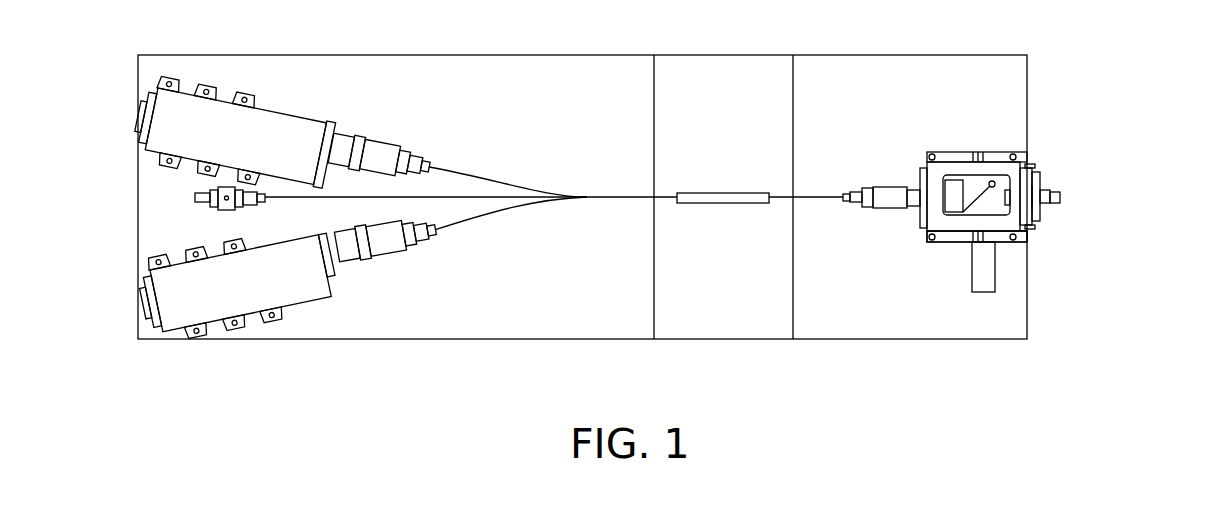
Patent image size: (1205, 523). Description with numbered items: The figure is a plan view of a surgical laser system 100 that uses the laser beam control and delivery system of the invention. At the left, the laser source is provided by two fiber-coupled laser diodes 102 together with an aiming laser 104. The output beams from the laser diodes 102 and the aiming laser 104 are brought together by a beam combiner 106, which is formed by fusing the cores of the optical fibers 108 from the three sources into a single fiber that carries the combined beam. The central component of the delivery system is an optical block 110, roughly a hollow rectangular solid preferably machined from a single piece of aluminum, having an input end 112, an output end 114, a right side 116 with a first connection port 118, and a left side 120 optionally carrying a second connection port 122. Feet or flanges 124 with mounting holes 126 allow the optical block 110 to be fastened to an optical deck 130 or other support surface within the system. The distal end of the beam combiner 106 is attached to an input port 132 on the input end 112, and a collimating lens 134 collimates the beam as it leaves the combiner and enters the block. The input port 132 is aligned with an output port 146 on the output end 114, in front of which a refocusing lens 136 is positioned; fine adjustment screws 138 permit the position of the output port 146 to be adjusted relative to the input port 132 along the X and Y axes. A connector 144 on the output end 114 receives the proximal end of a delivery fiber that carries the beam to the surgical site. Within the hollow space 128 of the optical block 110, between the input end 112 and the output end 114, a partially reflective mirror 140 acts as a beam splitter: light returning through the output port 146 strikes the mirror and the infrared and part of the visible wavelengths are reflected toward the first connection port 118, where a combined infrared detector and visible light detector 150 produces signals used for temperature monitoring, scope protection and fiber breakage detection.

The surgical laser system 100 is at (318, 357).
The laser diodes 102 is at (300, 162).
The aiming laser 104 is at (197, 197).
The beam combiner 106 is at (703, 203).
The optical fibers 108 is at (485, 178).
The optical block 110 is at (945, 225).
The input end 112 is at (917, 215).
The output end 114 is at (1042, 213).
The right side 116 is at (960, 243).
The first connection port 118 is at (1022, 237).
The left side 120 is at (983, 210).
The second connection port 122 is at (975, 155).
The flanges 124 is at (988, 155).
The mounting holes 126 is at (927, 167).
The hollow space 128 is at (993, 213).
The optical deck 130 is at (677, 325).
The input port 132 is at (920, 185).
The collimating lens 134 is at (945, 182).
The refocusing lens 136 is at (1023, 215).
The fine adjustment screws 138 is at (1033, 170).
The partially reflective mirror 140 is at (972, 197).
The connector 144 is at (1053, 195).
The output port 146 is at (1040, 187).
The combined infrared detector and visible light detector 150 is at (997, 285).